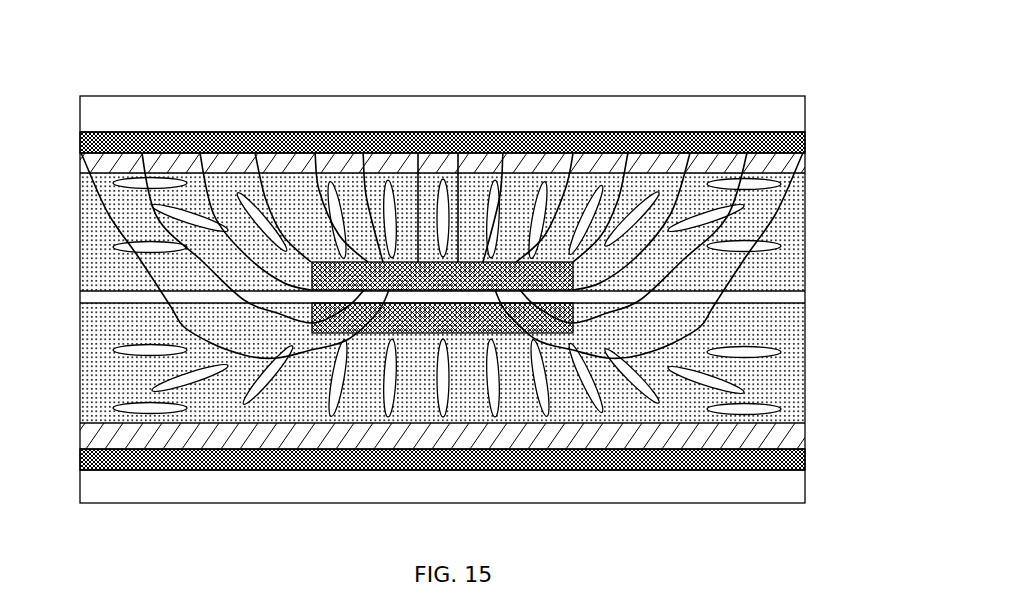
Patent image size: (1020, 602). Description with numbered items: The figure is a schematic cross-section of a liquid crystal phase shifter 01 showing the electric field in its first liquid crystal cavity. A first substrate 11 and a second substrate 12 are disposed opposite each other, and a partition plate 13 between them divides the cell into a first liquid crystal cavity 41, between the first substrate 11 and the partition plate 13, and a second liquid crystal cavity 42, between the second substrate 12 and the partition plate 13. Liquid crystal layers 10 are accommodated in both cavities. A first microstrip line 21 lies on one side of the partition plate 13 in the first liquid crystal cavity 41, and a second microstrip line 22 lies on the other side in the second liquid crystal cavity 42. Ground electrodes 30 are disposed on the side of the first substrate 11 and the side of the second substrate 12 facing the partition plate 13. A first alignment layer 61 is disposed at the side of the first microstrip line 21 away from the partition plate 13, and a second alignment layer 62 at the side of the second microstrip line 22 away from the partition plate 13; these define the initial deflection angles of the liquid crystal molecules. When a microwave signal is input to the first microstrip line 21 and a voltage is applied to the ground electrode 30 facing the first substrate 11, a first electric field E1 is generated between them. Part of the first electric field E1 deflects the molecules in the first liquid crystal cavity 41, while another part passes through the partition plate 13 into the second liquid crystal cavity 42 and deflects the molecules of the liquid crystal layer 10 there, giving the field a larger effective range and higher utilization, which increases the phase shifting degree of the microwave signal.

The liquid crystal phase shifter 01 is at (114, 37).
The liquid crystal layer 10 is at (793, 388).
The first substrate 11 is at (793, 117).
The second substrate 12 is at (793, 487).
The partition plate 13 is at (793, 296).
The first microstrip line 21 is at (442, 276).
The second microstrip line 22 is at (442, 318).
The ground electrode 30 is at (803, 148).
The first liquid crystal cavity 41 is at (73, 177).
The second liquid crystal cavity 42 is at (73, 308).
The first alignment layer 61 is at (805, 170).
The second alignment layer 62 is at (805, 445).
The first electric field E1 is at (805, 228).